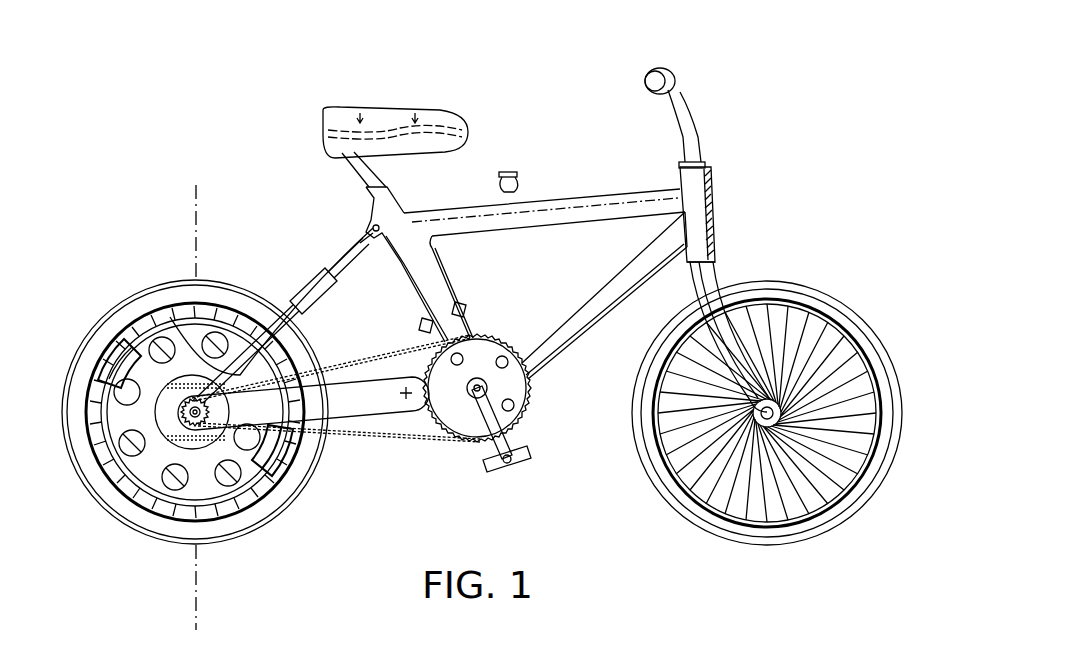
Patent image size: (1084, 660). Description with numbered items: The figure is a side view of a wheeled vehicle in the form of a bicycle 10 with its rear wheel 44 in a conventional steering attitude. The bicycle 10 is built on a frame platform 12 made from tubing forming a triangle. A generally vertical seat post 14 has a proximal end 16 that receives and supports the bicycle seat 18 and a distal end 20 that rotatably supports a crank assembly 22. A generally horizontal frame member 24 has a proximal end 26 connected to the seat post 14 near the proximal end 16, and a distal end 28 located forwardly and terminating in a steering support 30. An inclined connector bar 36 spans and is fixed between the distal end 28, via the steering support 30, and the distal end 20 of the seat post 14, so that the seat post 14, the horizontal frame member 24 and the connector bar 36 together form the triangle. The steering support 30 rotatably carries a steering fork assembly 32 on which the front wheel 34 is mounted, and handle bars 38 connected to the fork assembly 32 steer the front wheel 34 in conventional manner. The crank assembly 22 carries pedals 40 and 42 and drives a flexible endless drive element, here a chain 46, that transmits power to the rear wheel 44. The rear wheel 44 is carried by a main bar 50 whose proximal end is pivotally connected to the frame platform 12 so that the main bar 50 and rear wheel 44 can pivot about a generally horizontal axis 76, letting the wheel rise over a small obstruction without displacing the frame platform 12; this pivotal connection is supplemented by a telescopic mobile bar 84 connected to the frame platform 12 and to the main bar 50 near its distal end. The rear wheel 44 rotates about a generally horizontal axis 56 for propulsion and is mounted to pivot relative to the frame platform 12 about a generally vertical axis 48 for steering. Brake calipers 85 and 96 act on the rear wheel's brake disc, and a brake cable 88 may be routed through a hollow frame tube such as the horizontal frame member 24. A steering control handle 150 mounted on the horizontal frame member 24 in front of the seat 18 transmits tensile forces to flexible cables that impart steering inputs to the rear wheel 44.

The bicycle 10 is at (190, 57).
The frame platform 12 is at (587, 152).
The seat post 14 is at (438, 292).
The proximal end of seat post 16 is at (400, 195).
The bicycle seat 18 is at (370, 106).
The distal end of seat post 20 is at (457, 473).
The crank assembly 22 is at (540, 416).
The horizontal frame member 24 is at (542, 224).
The proximal end of horizontal frame member 26 is at (527, 193).
The distal end of horizontal frame member 28 is at (658, 175).
The steering support 30 is at (717, 200).
The steering fork assembly 32 is at (730, 352).
The front wheel 34 is at (710, 523).
The inclined connector bar 36 is at (575, 306).
The handle bars 38 is at (685, 78).
The pedal 40 is at (517, 460).
The pedal 42 is at (427, 330).
The rear wheel 44 is at (172, 192).
The chain 46 is at (380, 353).
The generally vertical axis 48 is at (193, 550).
The main bar 50 is at (343, 414).
The generally horizontal axis 56 is at (192, 414).
The generally horizontal axis 76 is at (400, 393).
The telescopic mobile bar 84 is at (297, 290).
The brake caliper 85 is at (118, 360).
The brake cable 88 is at (300, 285).
The brake caliper 96 is at (272, 458).
The steering control handle 150 is at (507, 172).